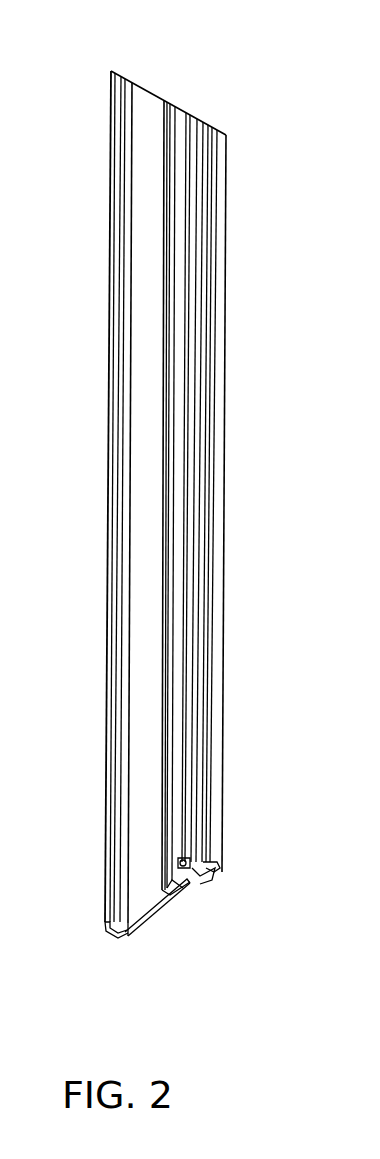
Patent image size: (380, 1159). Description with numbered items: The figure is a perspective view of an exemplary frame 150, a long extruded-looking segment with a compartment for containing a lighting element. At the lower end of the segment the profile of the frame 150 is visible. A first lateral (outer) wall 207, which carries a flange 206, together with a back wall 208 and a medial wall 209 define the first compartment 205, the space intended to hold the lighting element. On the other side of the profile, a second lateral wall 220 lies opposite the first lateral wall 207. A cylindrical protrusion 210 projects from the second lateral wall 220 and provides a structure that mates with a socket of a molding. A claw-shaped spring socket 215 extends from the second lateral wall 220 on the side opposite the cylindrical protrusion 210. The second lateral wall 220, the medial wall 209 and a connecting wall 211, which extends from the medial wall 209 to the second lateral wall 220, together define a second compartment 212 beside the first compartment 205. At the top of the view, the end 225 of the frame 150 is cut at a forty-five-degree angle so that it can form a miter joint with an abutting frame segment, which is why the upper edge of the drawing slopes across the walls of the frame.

The frame 150 is at (95, 722).
The second lateral wall 220 is at (214, 797).
The end 225 is at (155, 97).
The claw-shaped spring socket 215 is at (180, 863).
The cylindrical protrusion 210 is at (218, 871).
The second compartment 212 is at (205, 881).
The connecting wall 211 is at (178, 883).
The medial wall 209 is at (173, 912).
The back wall 208 is at (155, 923).
The first compartment 205 is at (137, 920).
The flange 206 is at (112, 922).
The first lateral wall 207 is at (115, 933).